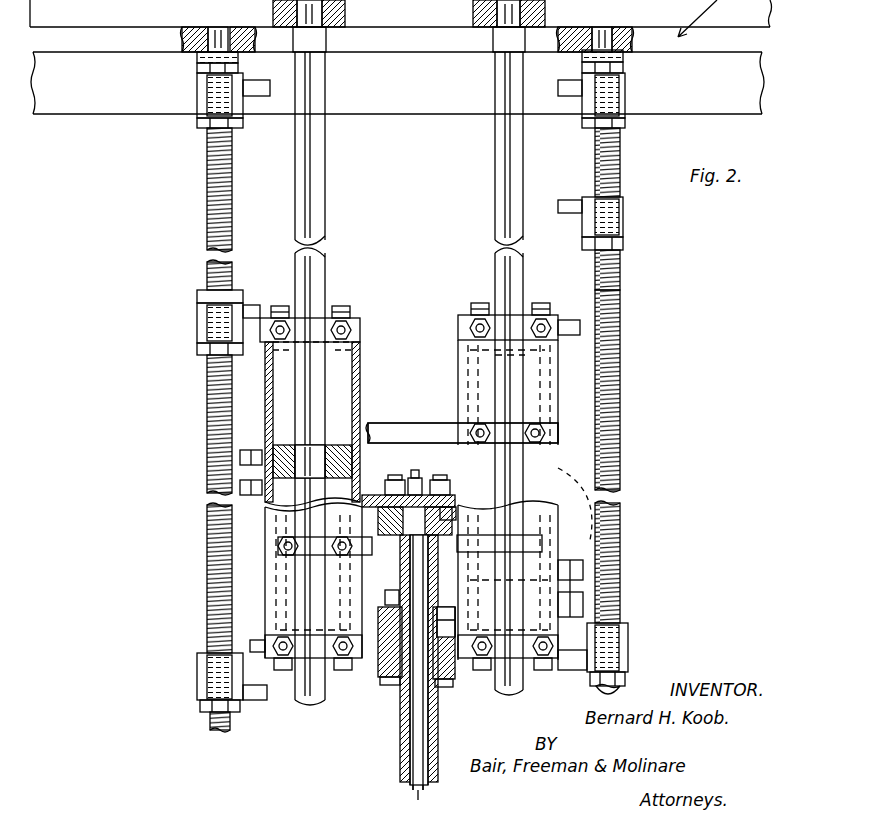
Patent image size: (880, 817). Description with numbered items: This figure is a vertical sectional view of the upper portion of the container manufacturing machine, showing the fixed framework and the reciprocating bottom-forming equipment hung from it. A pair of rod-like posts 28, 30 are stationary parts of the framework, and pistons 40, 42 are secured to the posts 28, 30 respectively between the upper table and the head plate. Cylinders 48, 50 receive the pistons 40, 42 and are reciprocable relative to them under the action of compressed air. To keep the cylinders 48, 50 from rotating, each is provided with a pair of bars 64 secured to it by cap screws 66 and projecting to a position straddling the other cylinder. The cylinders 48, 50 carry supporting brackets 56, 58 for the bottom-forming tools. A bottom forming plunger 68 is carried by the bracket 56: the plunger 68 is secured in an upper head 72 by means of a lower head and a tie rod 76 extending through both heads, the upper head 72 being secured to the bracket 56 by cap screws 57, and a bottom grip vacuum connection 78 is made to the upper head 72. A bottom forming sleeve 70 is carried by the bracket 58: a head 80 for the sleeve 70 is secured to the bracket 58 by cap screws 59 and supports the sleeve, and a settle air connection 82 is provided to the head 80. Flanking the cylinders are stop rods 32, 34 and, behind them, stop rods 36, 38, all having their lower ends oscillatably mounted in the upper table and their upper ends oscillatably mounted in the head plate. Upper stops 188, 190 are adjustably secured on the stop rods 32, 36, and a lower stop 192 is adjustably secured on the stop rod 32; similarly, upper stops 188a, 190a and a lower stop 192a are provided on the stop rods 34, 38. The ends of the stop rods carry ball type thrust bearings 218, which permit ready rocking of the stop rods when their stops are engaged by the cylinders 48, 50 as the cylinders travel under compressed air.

The rod-like post 28 is at (325, 157).
The rod-like post 30 is at (495, 160).
The stop rod 32 is at (207, 185).
The stop rod 34 is at (620, 150).
The stop rod 36 is at (207, 415).
The stop rod 38 is at (620, 452).
The piston 40 is at (278, 450).
The piston 42 is at (525, 569).
The cylinder 48 is at (258, 562).
The cylinder 50 is at (448, 391).
The supporting bracket 56 is at (375, 492).
The cap screws 57 is at (423, 479).
The supporting bracket 58 is at (440, 560).
The cap screws 59 is at (405, 590).
The bars 64 is at (432, 430).
The cap screws 66 is at (342, 556).
The bottom forming plunger 68 is at (413, 727).
The bottom forming sleeve 70 is at (400, 752).
The upper head 72 is at (385, 535).
The tie rod 76 is at (418, 478).
The bottom grip vacuum connection 78 is at (456, 513).
The head 80 is at (380, 670).
The settle air connection 82 is at (455, 660).
The upper stop 188 is at (205, 105).
The upper stop 188a is at (625, 92).
The upper stop 190 is at (197, 320).
The upper stop 190a is at (623, 222).
The lower stop 192 is at (210, 680).
The lower stop 192a is at (628, 655).
The ball type thrust bearings 218 is at (197, 60).